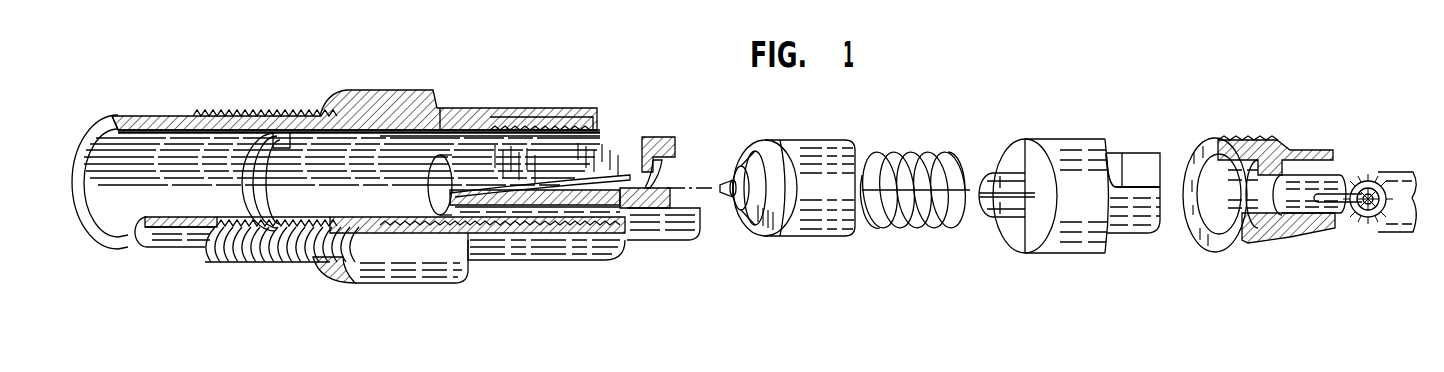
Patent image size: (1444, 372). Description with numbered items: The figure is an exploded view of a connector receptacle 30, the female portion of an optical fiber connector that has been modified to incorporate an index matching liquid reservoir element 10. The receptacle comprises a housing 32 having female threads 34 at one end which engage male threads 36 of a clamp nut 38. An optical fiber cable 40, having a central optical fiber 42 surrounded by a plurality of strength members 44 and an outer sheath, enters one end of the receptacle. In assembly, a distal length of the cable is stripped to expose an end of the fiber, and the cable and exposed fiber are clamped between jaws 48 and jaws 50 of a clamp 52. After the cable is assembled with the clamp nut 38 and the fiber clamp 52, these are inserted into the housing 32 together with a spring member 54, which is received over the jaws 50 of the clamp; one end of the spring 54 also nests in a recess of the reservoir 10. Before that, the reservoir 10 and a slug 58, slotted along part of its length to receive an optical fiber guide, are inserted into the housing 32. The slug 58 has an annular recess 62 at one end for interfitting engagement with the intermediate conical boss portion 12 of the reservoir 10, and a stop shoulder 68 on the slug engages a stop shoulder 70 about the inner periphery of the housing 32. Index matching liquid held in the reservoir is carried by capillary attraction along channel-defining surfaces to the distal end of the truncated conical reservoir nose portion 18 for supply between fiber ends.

The index matching liquid reservoir element 10 is at (815, 237).
The boss portion 12 is at (757, 163).
The reservoir nose portion 18 is at (717, 197).
The connector receptacle 30 is at (1048, 79).
The housing 32 is at (423, 283).
The female threads 34 is at (597, 113).
The male threads 36 is at (1238, 140).
The clamp nut 38 is at (1283, 252).
The optical fiber cable 40 is at (1390, 232).
The central optical fiber 42 is at (1337, 193).
The strength members 44 is at (1357, 227).
The jaws 48 is at (1128, 227).
The jaws 50 is at (1007, 173).
The clamp 52 is at (1058, 254).
The spring member 54 is at (930, 155).
The slug 58 is at (657, 137).
The annular recess 62 is at (667, 170).
The stop shoulder 68 is at (537, 123).
The stop shoulder 70 is at (279, 140).